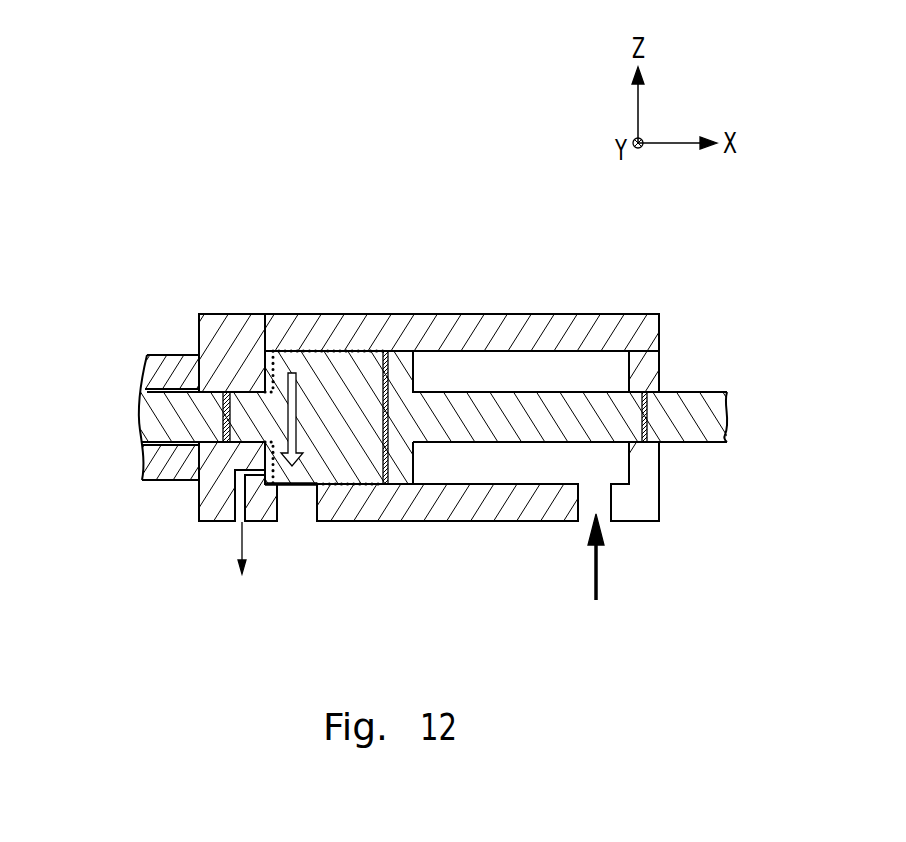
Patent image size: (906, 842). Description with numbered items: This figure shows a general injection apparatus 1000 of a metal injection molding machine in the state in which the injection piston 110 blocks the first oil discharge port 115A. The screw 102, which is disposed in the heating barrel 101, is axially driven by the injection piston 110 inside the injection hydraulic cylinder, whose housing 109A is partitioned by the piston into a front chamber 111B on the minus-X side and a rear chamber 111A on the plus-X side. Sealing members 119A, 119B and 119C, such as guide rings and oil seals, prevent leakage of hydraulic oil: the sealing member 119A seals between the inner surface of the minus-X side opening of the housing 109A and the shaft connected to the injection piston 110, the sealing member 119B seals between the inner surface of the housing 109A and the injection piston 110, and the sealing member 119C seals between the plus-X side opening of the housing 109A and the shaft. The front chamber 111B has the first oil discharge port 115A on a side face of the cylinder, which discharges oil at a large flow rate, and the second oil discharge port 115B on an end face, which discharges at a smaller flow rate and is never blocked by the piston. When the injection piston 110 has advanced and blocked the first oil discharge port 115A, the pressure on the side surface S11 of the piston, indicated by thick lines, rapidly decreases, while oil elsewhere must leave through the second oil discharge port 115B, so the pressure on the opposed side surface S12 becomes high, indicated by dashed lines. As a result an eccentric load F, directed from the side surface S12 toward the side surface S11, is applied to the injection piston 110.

The injection apparatus 1000 is at (379, 122).
The heating barrel 101 is at (150, 354).
The screw 102 is at (142, 409).
The housing 109A is at (547, 328).
The injection piston 110 is at (698, 397).
The rear chamber 111A is at (587, 372).
The front chamber 111B is at (268, 352).
The first oil discharge port 115A is at (315, 535).
The second oil discharge port 115B is at (222, 543).
The sealing member 119A is at (228, 444).
The sealing member 119B is at (388, 350).
The sealing member 119C is at (648, 432).
The side surface S11 is at (297, 490).
The side surface S12 is at (332, 349).
The eccentric load F is at (296, 418).